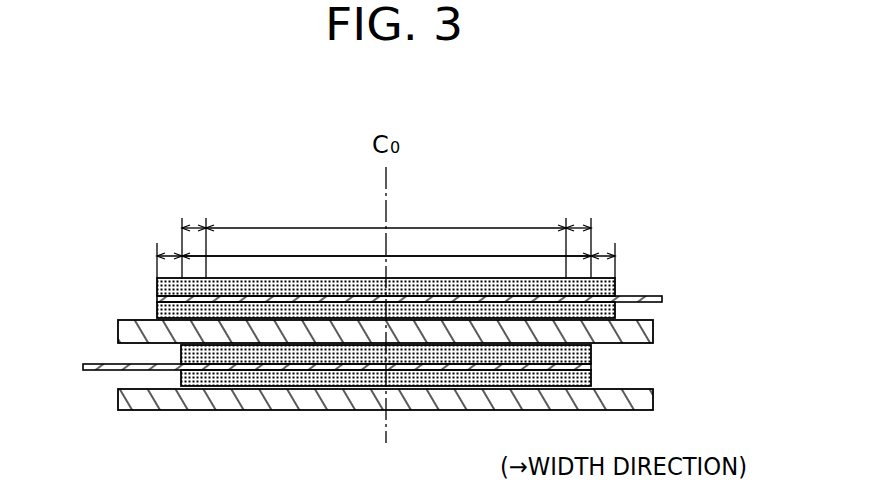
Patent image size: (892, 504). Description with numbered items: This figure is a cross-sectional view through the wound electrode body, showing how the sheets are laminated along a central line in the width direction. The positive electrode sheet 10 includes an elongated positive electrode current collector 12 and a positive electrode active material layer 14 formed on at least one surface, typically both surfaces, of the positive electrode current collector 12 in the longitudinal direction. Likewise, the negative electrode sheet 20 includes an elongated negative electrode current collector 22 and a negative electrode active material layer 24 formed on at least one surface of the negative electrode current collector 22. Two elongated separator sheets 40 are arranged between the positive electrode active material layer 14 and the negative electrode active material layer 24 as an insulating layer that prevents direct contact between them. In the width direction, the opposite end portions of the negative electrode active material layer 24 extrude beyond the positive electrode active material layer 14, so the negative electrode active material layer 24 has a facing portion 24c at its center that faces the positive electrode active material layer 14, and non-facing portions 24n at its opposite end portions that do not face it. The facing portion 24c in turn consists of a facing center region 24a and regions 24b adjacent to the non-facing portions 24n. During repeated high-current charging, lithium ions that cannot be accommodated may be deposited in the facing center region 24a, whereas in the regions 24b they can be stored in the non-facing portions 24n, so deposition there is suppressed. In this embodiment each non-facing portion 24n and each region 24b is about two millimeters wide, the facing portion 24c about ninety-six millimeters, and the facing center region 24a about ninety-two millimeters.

The positive electrode sheet 10 is at (435, 370).
The positive electrode current collector 12 is at (556, 368).
The positive electrode active material layer 14 is at (590, 374).
The negative electrode sheet 20 is at (472, 283).
The negative electrode current collector 22 is at (655, 299).
The negative electrode active material layer 24 is at (613, 310).
The facing center region 24a is at (458, 228).
The regions adjacent to the non-facing portions 24b is at (192, 226).
The facing portion 24c is at (310, 255).
The non-facing portions 24n is at (177, 254).
The separator sheet 40 is at (648, 334).